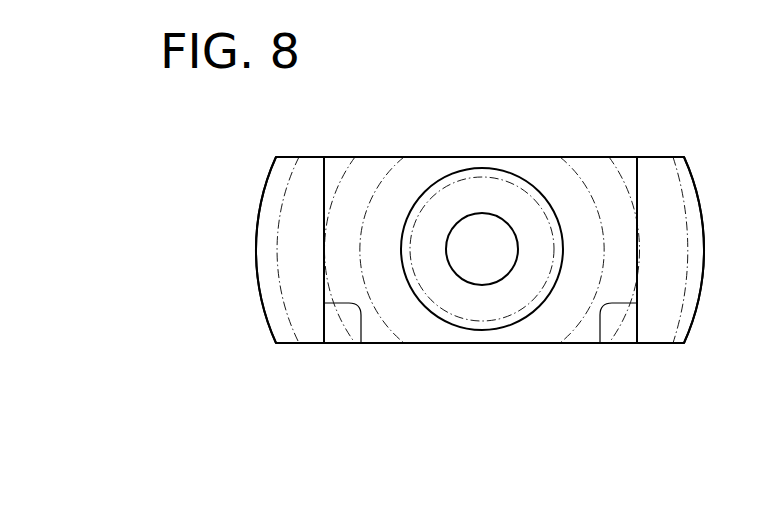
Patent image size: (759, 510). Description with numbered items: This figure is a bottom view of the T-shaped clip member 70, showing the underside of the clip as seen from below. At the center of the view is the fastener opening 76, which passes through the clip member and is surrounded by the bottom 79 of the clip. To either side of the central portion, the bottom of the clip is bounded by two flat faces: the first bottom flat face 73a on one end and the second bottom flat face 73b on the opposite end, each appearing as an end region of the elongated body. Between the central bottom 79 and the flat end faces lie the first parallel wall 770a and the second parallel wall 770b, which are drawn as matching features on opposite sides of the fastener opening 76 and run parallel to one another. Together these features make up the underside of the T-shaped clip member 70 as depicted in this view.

The T-shaped clip member 70 is at (380, 113).
The first bottom flat face 73a is at (652, 185).
The second bottom flat face 73b is at (310, 177).
The fastener opening 76 is at (482, 249).
The bottom 79 is at (478, 322).
The first parallel wall 770a is at (600, 343).
The second parallel wall 770b is at (361, 343).